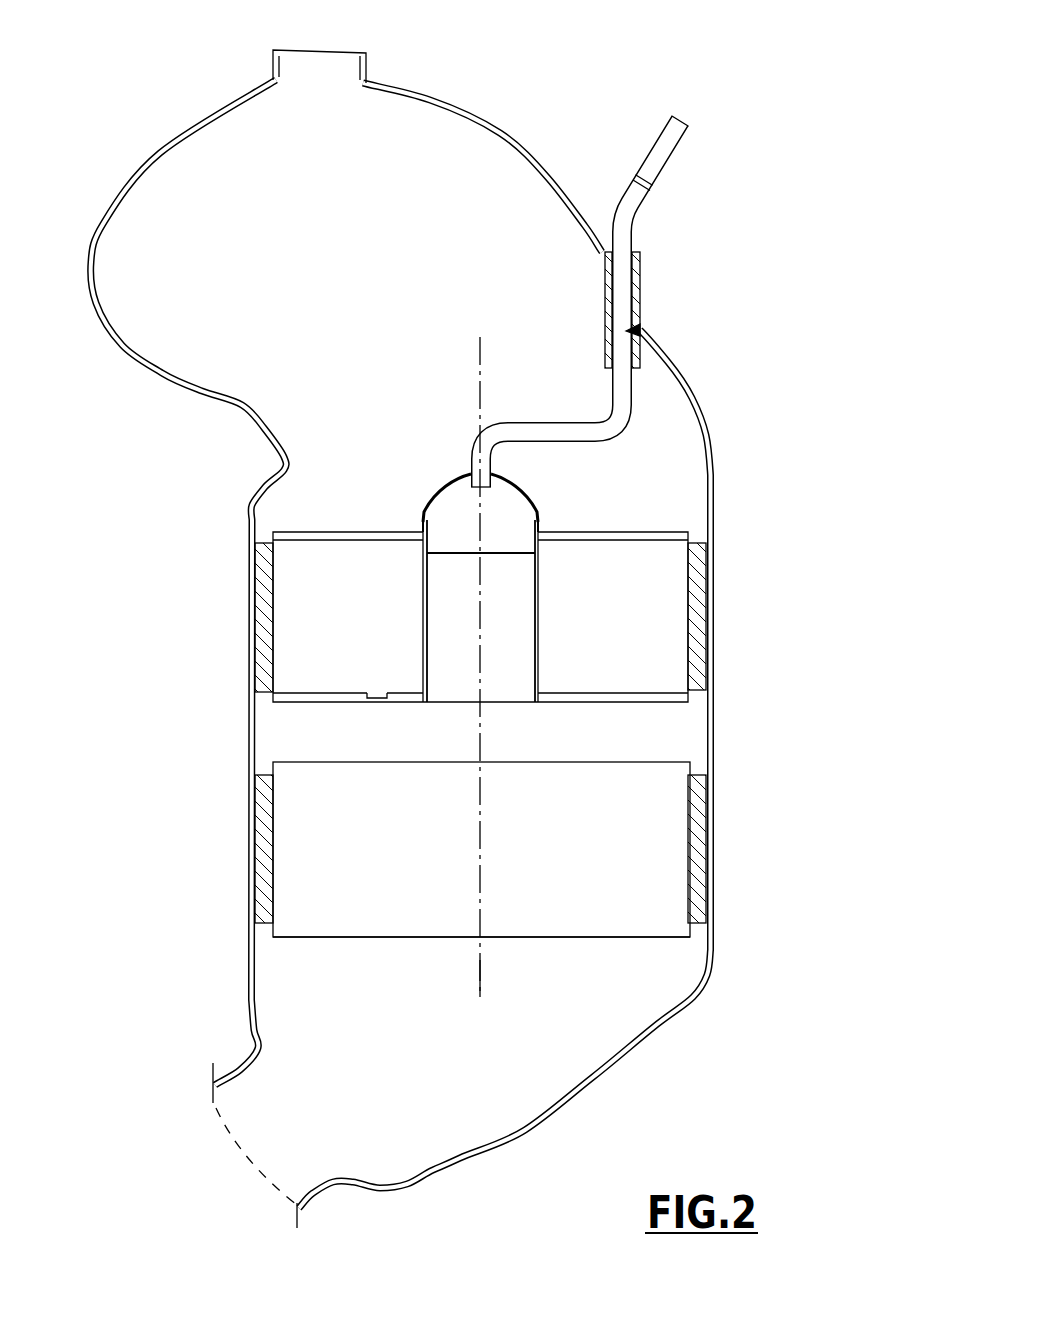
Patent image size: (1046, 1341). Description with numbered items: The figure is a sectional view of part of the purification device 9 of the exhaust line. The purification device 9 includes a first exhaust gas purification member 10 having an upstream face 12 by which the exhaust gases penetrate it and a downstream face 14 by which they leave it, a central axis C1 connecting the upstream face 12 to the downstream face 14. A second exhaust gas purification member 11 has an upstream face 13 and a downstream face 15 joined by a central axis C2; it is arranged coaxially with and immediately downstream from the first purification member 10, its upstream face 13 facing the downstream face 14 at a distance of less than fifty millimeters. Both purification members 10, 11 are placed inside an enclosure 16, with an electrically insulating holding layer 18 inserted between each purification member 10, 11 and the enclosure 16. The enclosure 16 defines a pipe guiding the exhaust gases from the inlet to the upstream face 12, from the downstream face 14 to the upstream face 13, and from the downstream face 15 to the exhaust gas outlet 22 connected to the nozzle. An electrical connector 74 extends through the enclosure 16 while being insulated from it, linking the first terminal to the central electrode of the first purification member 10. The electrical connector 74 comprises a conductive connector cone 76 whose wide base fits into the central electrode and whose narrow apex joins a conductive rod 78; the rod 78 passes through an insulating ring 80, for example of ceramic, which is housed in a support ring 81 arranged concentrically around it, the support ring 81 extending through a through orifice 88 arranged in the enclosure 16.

The purification device 9 is at (552, 105).
The first exhaust gas purification member 10 is at (642, 608).
The second exhaust gas purification member 11 is at (642, 838).
The upstream face 12 is at (643, 532).
The upstream face 13 is at (308, 760).
The downstream face 14 is at (645, 703).
The downstream face 15 is at (643, 935).
The enclosure 16 is at (256, 425).
The holding layer 18 is at (263, 607).
The exhaust gas outlet 22 is at (277, 1137).
The electrical connector 74 is at (658, 221).
The connector cone 76 is at (445, 488).
The conductive rod 78 is at (548, 437).
The insulating ring 80 is at (601, 251).
The support ring 81 is at (640, 290).
The through orifice 88 is at (634, 329).
The central axis C1 is at (478, 365).
The central axis C2 is at (482, 963).